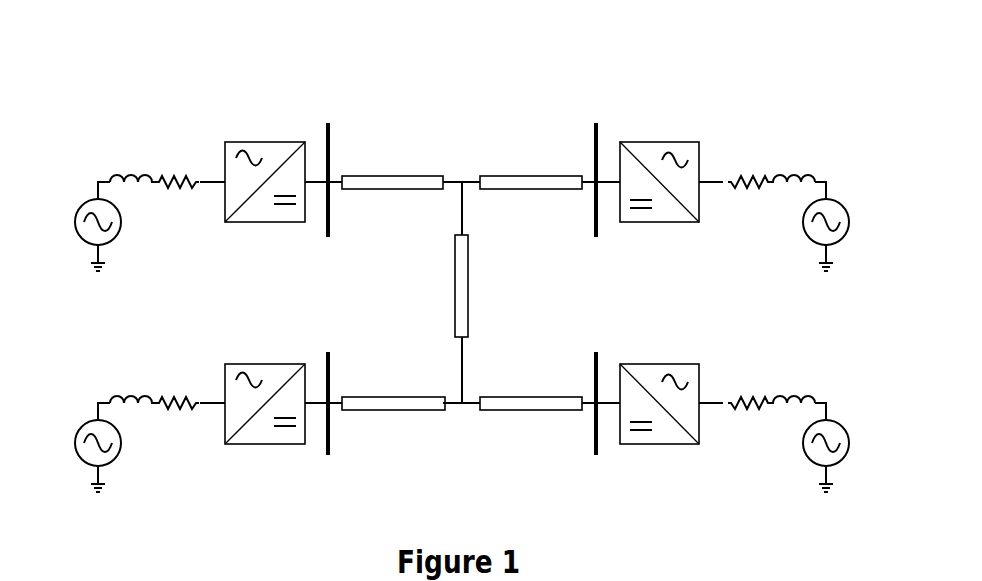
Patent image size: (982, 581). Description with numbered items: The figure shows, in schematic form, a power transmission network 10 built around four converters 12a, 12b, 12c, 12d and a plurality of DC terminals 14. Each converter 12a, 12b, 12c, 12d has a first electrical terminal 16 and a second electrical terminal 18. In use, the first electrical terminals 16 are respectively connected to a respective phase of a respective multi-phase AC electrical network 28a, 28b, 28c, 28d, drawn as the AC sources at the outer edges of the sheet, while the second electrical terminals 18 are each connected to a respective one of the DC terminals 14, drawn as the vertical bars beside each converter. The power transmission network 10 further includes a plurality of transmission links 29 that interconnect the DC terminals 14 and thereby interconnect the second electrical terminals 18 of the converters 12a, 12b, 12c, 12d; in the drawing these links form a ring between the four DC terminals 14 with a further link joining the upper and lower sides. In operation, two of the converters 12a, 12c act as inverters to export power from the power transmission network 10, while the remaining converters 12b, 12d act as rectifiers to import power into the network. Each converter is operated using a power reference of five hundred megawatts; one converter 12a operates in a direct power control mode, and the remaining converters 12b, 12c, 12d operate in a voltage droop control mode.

The power transmission network 10 is at (491, 128).
The converter 12a is at (267, 147).
The converter 12b is at (655, 150).
The converter 12c is at (263, 437).
The converter 12d is at (660, 437).
The DC terminal 14 is at (461, 290).
The first electrical terminal 16 is at (222, 188).
The second electrical terminal 18 is at (307, 190).
The multi-phase AC electrical network 28a is at (87, 208).
The multi-phase AC electrical network 28b is at (840, 197).
The multi-phase AC electrical network 28c is at (88, 430).
The multi-phase AC electrical network 28d is at (830, 430).
The transmission link 29 is at (392, 178).